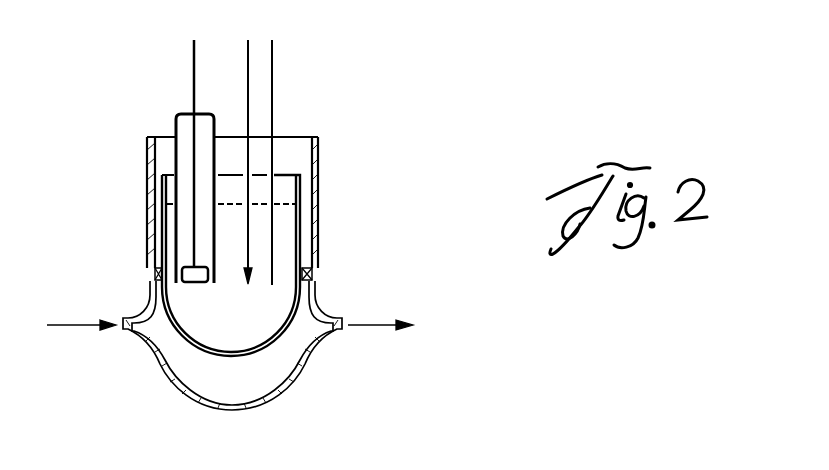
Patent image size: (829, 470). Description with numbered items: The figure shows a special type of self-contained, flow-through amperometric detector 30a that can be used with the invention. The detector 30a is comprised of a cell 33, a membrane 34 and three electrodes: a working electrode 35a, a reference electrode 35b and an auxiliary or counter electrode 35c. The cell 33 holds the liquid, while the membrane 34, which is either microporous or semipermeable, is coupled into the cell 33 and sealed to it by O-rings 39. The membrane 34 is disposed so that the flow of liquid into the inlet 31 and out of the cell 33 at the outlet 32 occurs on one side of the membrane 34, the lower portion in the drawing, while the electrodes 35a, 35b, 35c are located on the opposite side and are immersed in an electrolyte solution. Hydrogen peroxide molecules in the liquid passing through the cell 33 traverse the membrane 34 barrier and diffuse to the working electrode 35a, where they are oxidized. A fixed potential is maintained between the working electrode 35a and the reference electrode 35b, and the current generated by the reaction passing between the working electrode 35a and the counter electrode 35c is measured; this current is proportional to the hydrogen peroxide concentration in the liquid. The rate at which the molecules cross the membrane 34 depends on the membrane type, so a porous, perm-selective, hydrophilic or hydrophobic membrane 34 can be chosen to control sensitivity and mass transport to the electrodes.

The amperometric detector 30a is at (322, 153).
The inlet 31 is at (119, 326).
The outlet 32 is at (341, 329).
The cell 33 is at (290, 393).
The membrane 34 is at (203, 348).
The working electrode 35a is at (193, 63).
The reference electrode 35b is at (248, 55).
The auxiliary (or counter) electrode 35c is at (272, 87).
The O-rings 39 is at (156, 272).